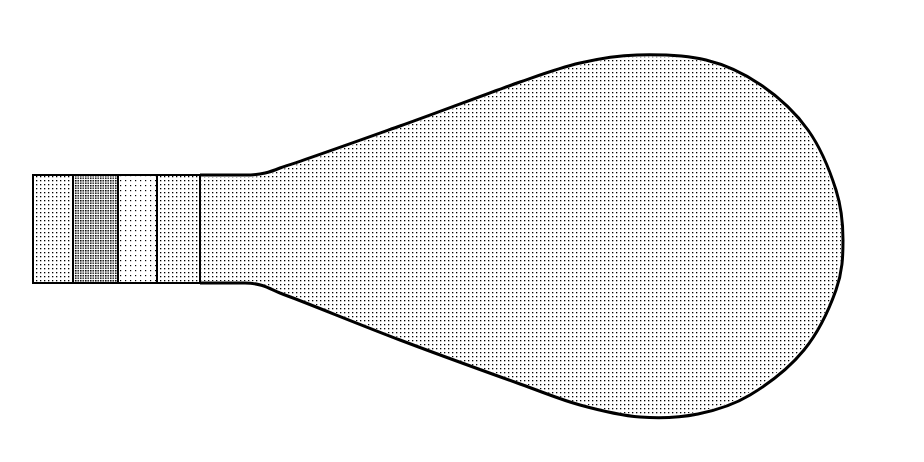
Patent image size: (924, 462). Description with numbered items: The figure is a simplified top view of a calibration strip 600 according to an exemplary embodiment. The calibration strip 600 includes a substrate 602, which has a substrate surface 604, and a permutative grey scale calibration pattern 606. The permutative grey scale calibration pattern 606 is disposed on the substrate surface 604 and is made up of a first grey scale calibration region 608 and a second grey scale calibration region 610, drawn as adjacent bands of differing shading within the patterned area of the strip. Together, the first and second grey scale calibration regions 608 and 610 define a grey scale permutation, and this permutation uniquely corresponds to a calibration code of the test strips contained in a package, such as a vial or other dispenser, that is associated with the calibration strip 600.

The calibration strip 600 is at (227, 78).
The substrate 602 is at (450, 366).
The substrate surface 604 is at (723, 122).
The permutative grey scale calibration pattern 606 is at (203, 166).
The first grey scale calibration region 608 is at (90, 276).
The second grey scale calibration region 610 is at (175, 276).